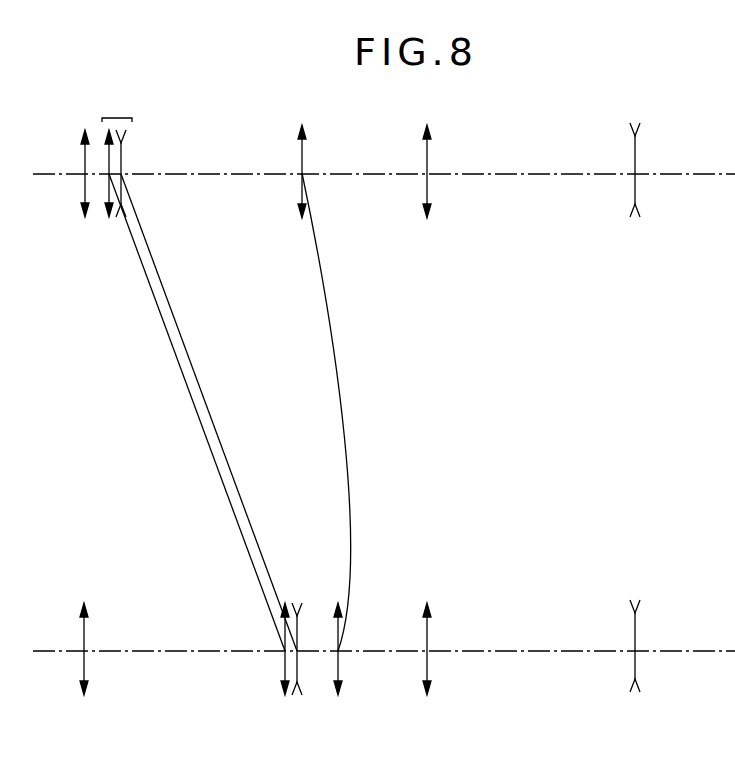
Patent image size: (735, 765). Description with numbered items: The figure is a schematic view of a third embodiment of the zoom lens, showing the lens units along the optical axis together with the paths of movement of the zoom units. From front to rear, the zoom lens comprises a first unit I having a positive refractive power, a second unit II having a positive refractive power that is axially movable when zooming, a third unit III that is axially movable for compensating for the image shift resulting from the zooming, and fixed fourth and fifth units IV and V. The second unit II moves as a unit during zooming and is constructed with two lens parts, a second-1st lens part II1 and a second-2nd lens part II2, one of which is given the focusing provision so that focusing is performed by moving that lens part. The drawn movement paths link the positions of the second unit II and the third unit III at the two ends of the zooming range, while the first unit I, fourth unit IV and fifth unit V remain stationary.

The first unit I is at (85, 154).
The second unit II is at (115, 118).
The second-1st lens part II1 is at (109, 212).
The second-2nd lens part II2 is at (122, 196).
The third unit III is at (302, 140).
The fourth unit IV is at (427, 140).
The fifth unit V is at (633, 127).